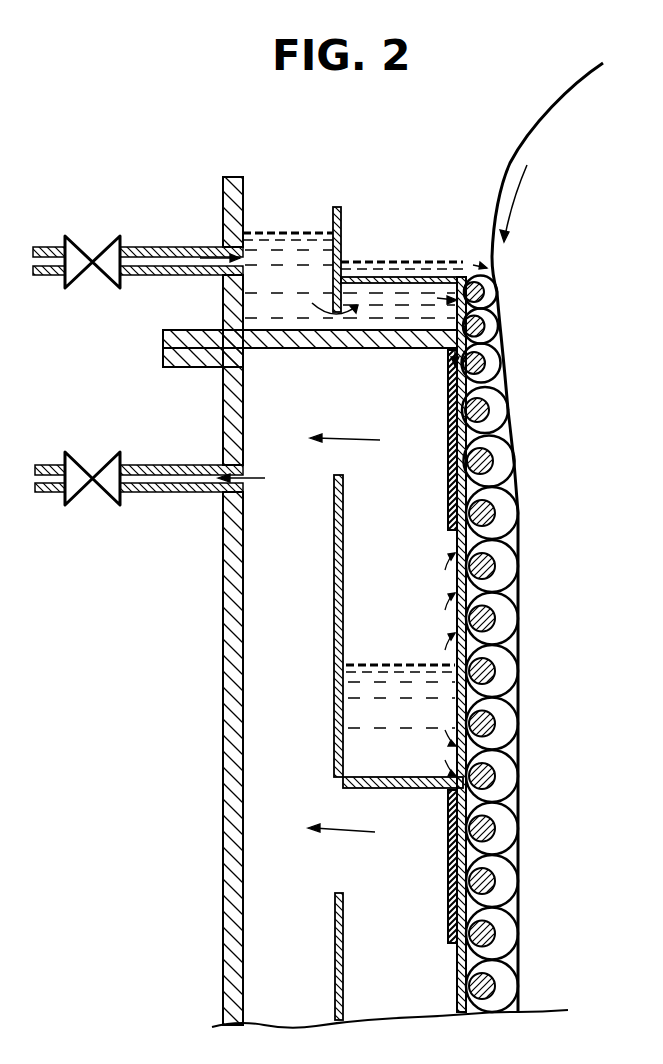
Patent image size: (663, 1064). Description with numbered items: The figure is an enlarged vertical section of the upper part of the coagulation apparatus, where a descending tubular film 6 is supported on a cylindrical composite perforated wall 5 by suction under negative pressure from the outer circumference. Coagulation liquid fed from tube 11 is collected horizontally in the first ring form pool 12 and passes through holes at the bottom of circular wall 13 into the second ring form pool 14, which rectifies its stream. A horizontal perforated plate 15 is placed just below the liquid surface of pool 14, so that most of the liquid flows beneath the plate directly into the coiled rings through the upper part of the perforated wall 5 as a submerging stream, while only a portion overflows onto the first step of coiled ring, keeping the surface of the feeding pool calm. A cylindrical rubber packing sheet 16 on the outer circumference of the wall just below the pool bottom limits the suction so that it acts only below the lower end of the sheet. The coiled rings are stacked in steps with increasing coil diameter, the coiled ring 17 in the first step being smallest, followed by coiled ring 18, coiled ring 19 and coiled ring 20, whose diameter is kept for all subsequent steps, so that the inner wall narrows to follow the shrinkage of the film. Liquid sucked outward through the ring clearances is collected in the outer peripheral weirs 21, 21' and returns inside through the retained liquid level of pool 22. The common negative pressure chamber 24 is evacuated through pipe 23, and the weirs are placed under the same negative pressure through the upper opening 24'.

The perforated wall 5 is at (457, 545).
The tubular film 6 is at (550, 112).
The tube 11 is at (163, 247).
The first ring form pool 12 is at (289, 233).
The circular wall 13 is at (336, 205).
The second ring form pool 14 is at (385, 262).
The horizontal perforated plate 15 is at (428, 277).
The cylindrical rubber packing sheet 16 is at (455, 403).
The coiled ring in the first step 17 is at (497, 301).
The coiled ring in the second step 18 is at (503, 348).
The coiled ring in the third step 19 is at (511, 382).
The coiled ring in the fourth step 20 is at (510, 386).
The outer peripheral weir 21 is at (365, 641).
The outer peripheral weir 21' is at (306, 956).
The pool 22 is at (352, 720).
The pipe 23 is at (156, 493).
The common negative pressure chamber 24 is at (222, 601).
The upper opening 24' is at (276, 640).